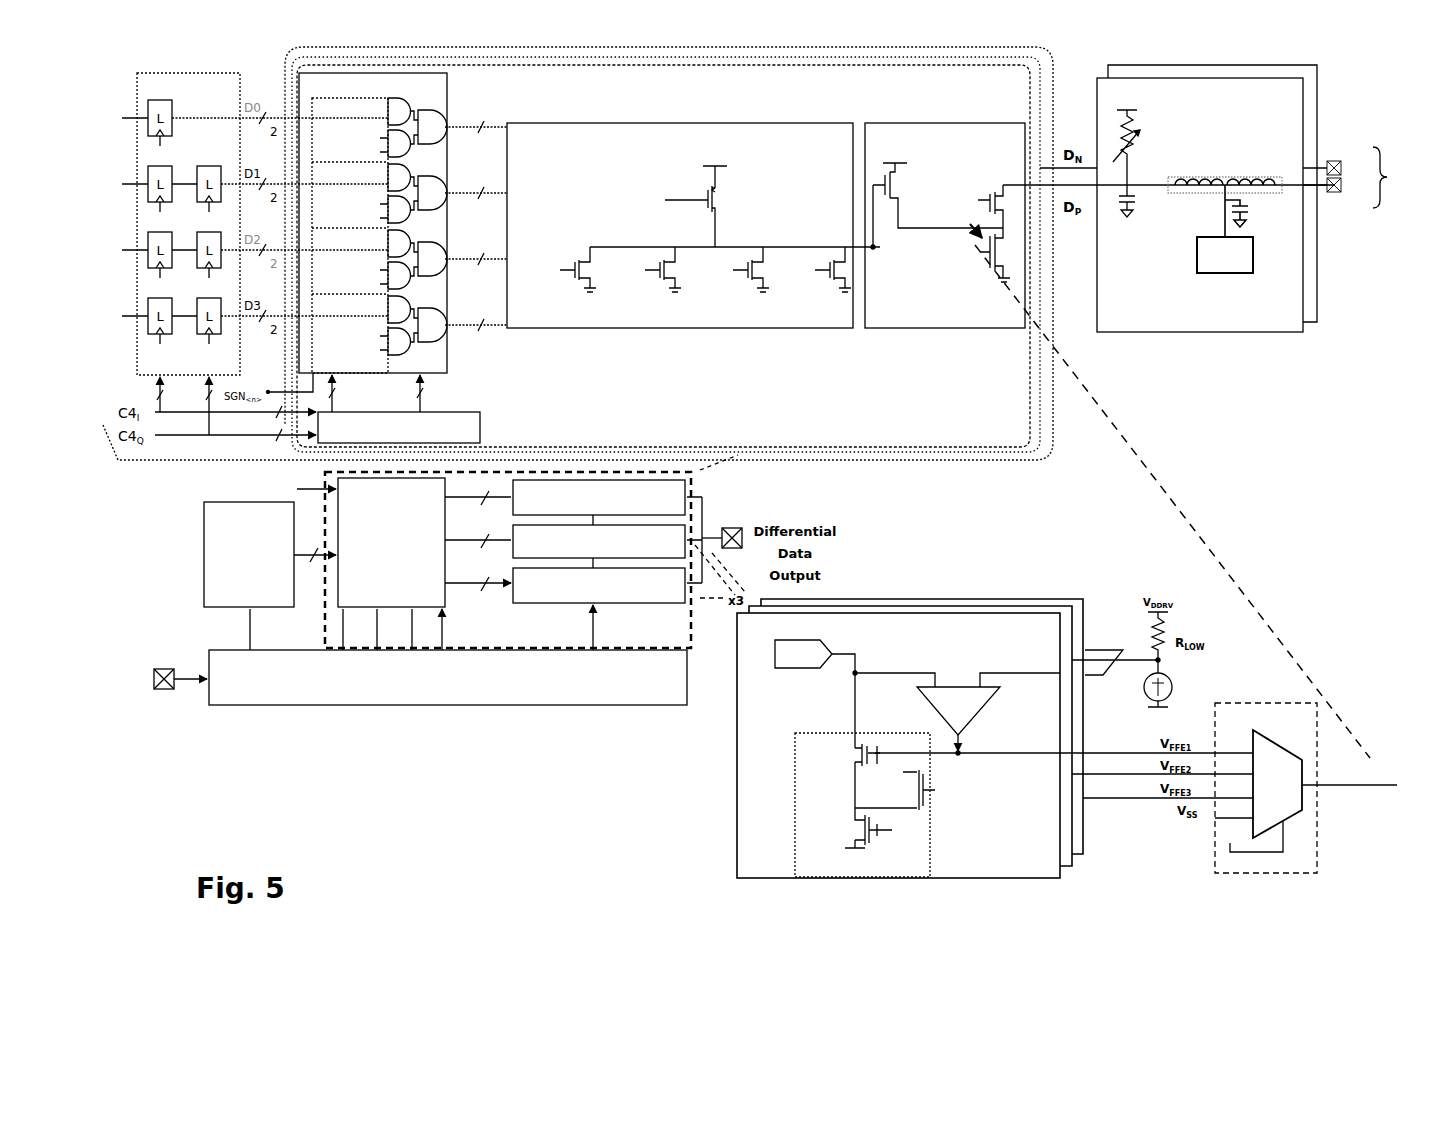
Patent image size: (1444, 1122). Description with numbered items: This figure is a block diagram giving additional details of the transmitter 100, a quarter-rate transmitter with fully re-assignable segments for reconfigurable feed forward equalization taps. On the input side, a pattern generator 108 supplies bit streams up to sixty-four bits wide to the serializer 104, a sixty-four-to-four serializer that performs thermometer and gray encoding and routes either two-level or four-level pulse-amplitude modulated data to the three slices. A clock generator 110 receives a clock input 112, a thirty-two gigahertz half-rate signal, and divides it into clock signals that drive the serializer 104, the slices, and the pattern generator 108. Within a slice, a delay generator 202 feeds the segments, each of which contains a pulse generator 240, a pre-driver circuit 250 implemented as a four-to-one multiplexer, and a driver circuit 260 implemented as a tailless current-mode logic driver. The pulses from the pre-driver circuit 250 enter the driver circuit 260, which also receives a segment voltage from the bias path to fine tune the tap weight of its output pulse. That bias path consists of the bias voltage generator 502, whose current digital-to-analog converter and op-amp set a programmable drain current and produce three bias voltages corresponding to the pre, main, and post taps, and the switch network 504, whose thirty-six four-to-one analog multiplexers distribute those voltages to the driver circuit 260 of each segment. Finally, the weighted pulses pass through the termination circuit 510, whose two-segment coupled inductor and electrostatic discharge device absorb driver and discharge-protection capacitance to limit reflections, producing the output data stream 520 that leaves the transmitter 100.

The transmitter 100 is at (493, 552).
The serializer 104 is at (407, 496).
The pattern generator 108 is at (204, 565).
The clock generator 110 is at (478, 705).
The clock input 112 is at (164, 670).
The delay generator 202 is at (137, 280).
The pulse generator 240 is at (447, 96).
The pre-driver circuit 250 is at (612, 328).
The driver circuit 260 is at (946, 328).
The bias voltage generator 502 is at (905, 598).
The switch network 504 is at (1310, 818).
The termination circuit 510 is at (1244, 332).
The output data stream 520 is at (1366, 177).